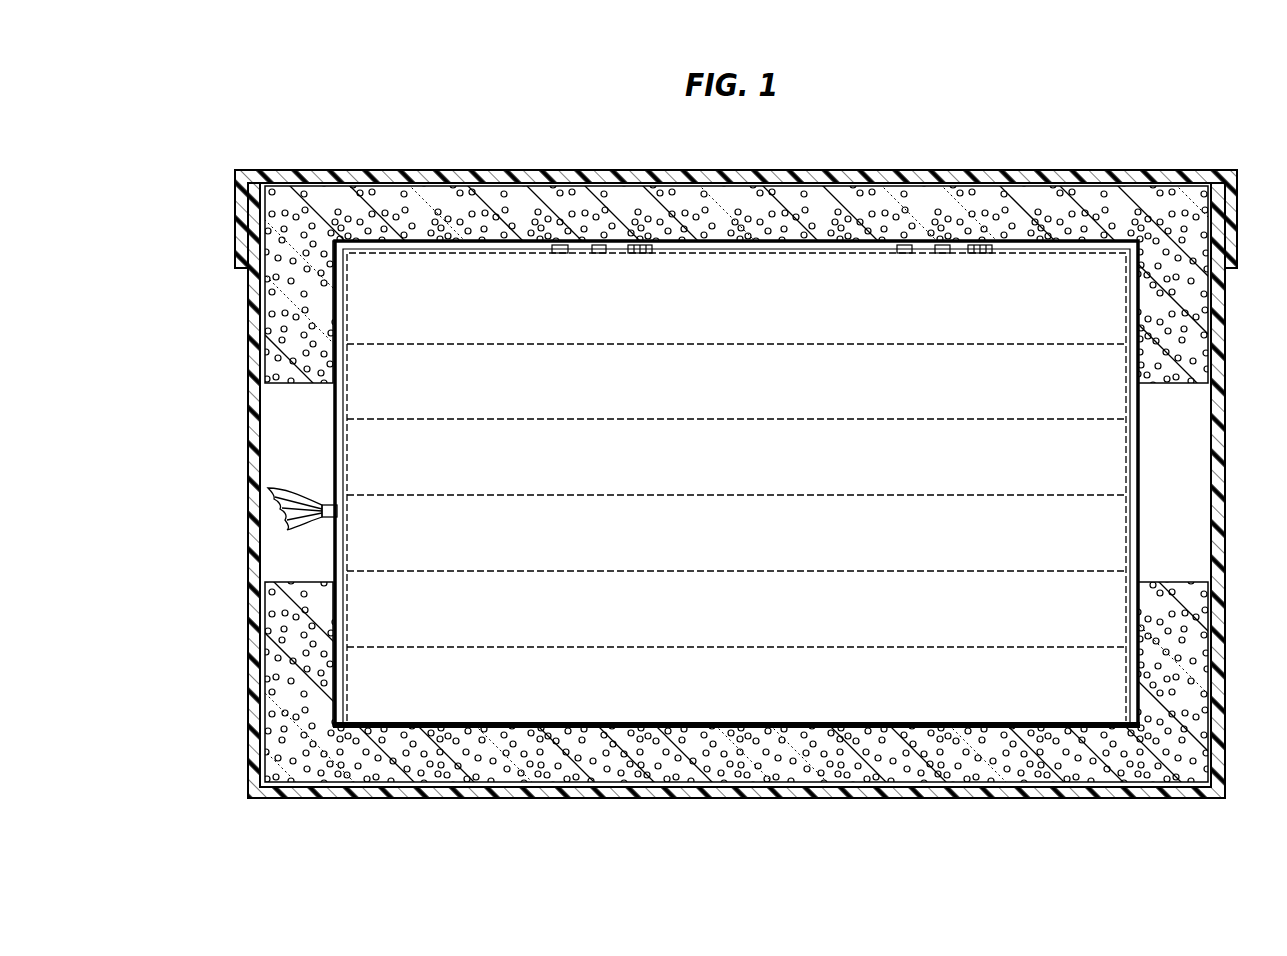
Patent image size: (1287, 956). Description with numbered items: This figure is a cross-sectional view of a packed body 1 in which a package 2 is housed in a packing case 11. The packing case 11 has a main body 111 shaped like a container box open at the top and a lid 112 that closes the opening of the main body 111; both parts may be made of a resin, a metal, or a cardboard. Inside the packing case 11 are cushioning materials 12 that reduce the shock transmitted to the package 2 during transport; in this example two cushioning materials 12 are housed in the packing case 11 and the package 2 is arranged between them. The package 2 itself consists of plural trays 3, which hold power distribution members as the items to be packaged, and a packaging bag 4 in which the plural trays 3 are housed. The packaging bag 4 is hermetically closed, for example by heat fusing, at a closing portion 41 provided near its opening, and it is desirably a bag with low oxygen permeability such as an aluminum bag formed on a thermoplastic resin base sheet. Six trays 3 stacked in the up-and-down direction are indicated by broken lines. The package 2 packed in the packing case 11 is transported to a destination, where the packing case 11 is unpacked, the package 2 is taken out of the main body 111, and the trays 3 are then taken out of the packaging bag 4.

The packed body 1 is at (218, 172).
The packing case 11 is at (158, 238).
The main body 111 is at (252, 310).
The lid 112 is at (243, 263).
The cushioning materials 12 is at (288, 357).
The package 2 is at (1134, 233).
The trays 3 is at (1110, 310).
The packaging bag 4 is at (337, 474).
The closing portion 41 is at (326, 516).